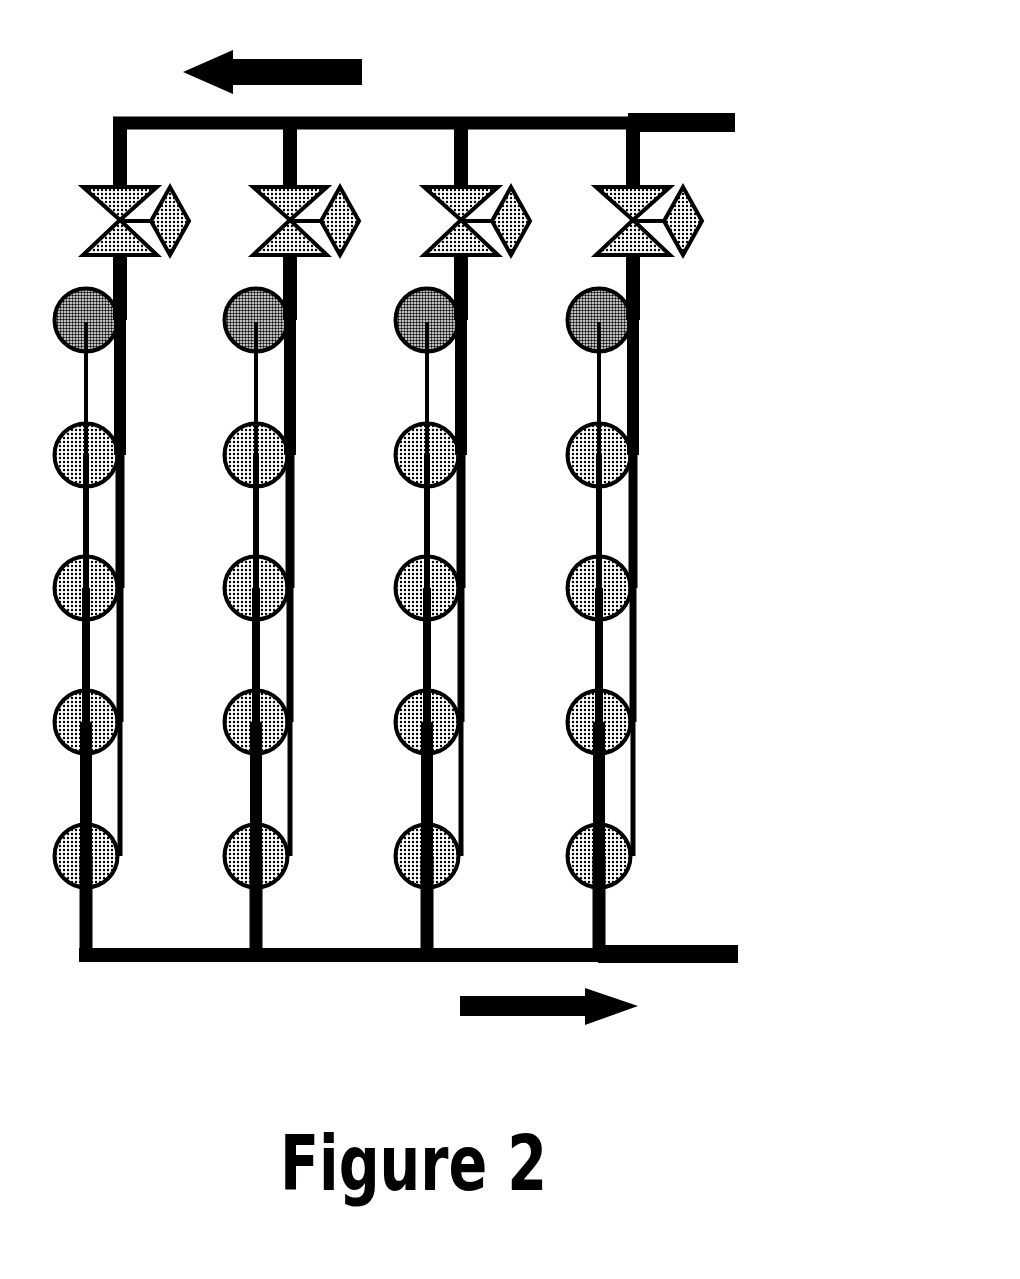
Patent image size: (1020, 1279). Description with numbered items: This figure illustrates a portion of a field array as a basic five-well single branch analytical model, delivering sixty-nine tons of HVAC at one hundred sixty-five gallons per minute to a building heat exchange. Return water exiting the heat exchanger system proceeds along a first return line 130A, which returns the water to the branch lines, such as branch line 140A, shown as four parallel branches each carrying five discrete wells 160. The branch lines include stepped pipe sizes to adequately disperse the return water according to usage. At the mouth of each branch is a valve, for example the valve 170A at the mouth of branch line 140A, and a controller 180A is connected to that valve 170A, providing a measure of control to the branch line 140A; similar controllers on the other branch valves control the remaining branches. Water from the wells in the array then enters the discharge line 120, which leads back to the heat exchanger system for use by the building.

The discharge line 120 is at (703, 936).
The first return line 130A is at (693, 102).
The branch line 140A is at (652, 162).
The wells 160 is at (653, 457).
The valve 170A is at (673, 266).
The controller 180A is at (713, 222).